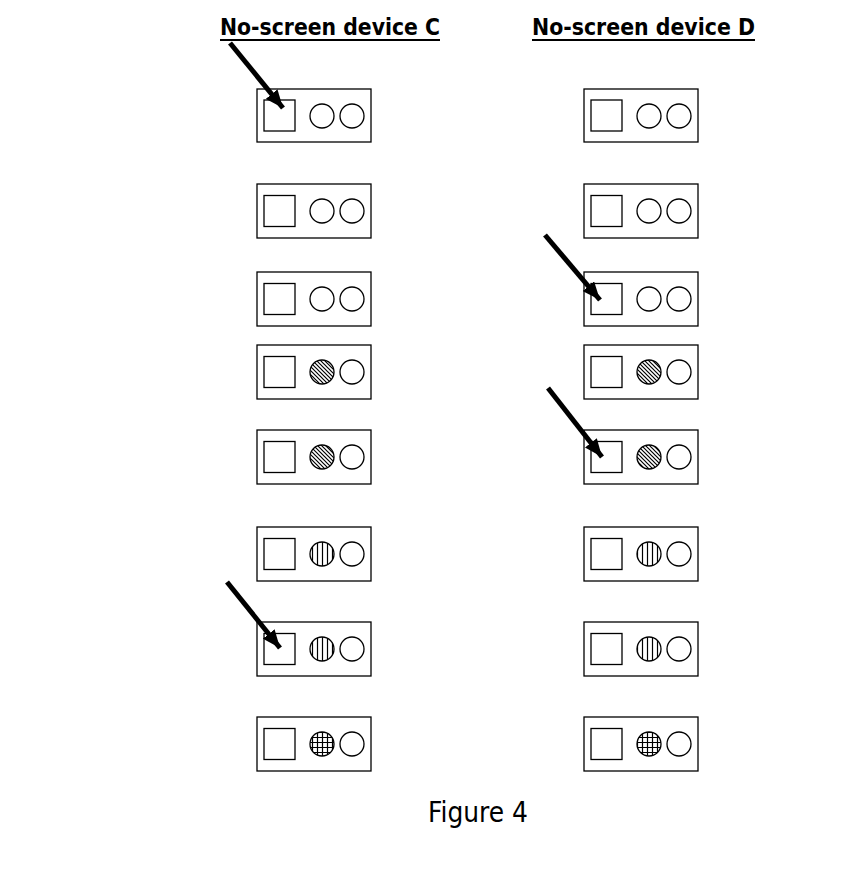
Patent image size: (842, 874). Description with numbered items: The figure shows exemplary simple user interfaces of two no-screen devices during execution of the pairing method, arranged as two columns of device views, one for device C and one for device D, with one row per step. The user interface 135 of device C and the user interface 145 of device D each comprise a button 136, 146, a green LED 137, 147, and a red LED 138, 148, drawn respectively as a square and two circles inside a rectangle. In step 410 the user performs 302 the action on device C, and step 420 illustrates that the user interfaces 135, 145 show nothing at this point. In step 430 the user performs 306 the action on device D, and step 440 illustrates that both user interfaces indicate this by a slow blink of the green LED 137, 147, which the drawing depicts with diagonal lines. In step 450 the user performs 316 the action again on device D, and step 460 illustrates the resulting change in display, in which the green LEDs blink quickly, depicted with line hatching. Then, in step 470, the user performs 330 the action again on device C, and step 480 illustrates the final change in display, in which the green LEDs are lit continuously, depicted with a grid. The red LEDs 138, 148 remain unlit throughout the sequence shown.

The user interface 135 is at (361, 89).
The button 136 is at (287, 100).
The green LED 137 is at (322, 128).
The red LED 138 is at (365, 108).
The user interface 145 is at (689, 89).
The button 146 is at (613, 100).
The green LED 147 is at (649, 128).
The red LED 148 is at (692, 108).
The user action on device C 302 is at (238, 68).
The user action on device D 306 is at (583, 273).
The repeated user action on device D 316 is at (583, 435).
The repeated user action on device C 330 is at (258, 634).
The step 410 is at (138, 116).
The step 420 is at (138, 211).
The step 430 is at (138, 299).
The step 440 is at (138, 372).
The step 450 is at (138, 457).
The step 460 is at (138, 554).
The step 470 is at (138, 648).
The step 480 is at (138, 745).